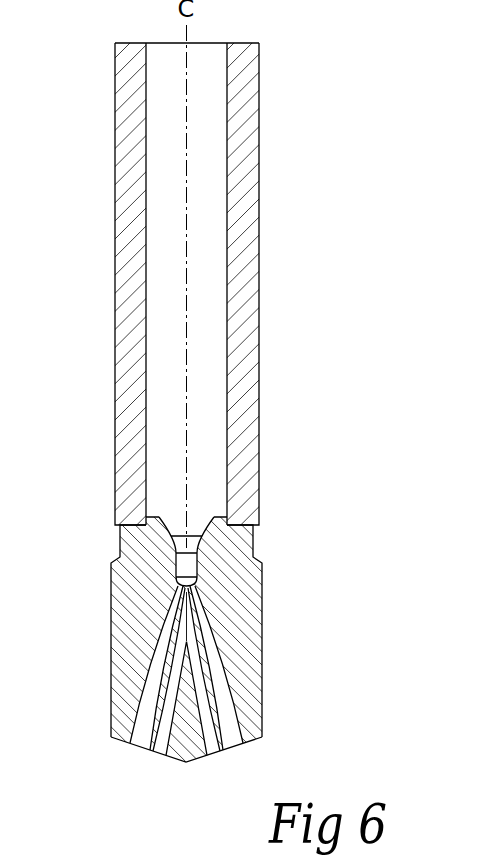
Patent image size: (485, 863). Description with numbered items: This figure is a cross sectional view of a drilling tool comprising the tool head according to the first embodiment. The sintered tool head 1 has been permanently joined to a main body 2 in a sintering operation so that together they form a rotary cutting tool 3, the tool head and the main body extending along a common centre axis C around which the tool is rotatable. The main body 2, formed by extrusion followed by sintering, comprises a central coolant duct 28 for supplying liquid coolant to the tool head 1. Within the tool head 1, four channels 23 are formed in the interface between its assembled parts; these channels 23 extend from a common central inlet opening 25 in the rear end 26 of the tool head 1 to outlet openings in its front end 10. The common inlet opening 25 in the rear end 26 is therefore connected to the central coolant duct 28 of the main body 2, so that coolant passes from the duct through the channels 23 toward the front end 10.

The tool head 1 is at (247, 580).
The main body 2 is at (247, 300).
The rotary cutting tool 3 is at (287, 217).
The front end 10 is at (186, 765).
The channels 23 is at (155, 733).
The common inlet opening 25 is at (178, 525).
The rear end 26 is at (220, 514).
The central coolant duct 28 is at (208, 397).